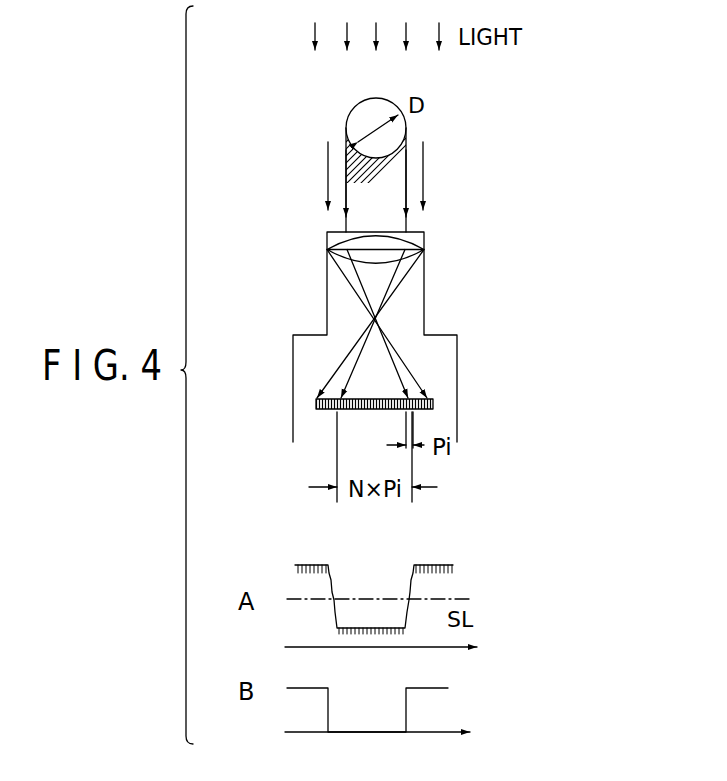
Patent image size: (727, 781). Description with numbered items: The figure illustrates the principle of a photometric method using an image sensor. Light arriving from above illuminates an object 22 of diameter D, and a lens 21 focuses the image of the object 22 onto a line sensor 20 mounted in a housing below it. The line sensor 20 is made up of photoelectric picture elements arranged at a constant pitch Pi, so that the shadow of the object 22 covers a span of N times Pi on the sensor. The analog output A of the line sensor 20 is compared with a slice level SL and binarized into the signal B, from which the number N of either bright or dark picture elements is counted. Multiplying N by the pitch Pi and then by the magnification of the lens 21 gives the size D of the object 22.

The line sensor 20 is at (433, 404).
The lens 21 is at (425, 245).
The object 22 is at (348, 118).